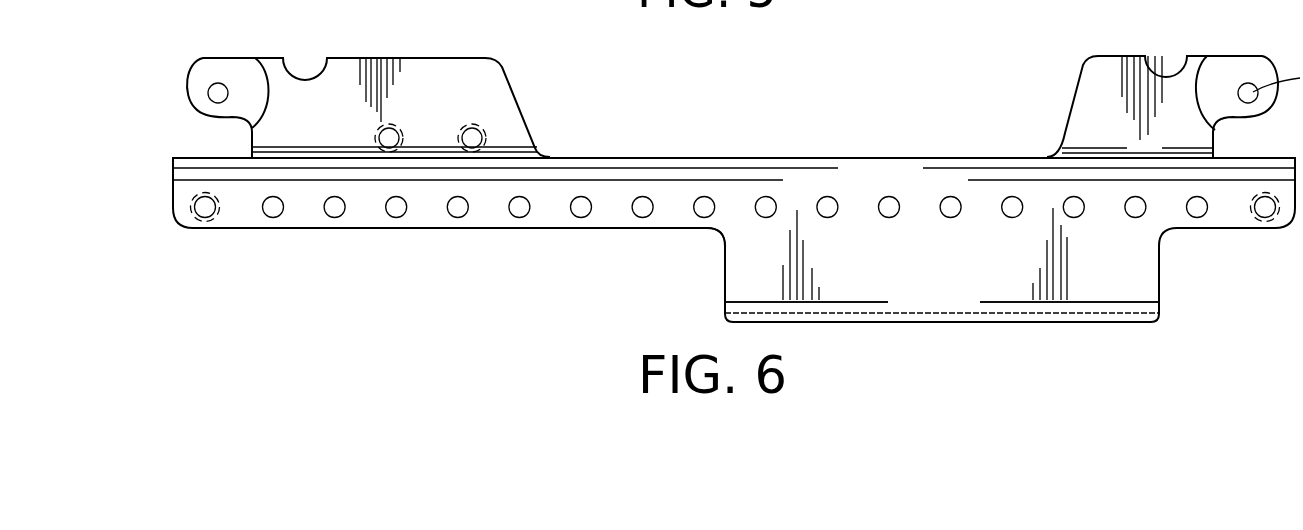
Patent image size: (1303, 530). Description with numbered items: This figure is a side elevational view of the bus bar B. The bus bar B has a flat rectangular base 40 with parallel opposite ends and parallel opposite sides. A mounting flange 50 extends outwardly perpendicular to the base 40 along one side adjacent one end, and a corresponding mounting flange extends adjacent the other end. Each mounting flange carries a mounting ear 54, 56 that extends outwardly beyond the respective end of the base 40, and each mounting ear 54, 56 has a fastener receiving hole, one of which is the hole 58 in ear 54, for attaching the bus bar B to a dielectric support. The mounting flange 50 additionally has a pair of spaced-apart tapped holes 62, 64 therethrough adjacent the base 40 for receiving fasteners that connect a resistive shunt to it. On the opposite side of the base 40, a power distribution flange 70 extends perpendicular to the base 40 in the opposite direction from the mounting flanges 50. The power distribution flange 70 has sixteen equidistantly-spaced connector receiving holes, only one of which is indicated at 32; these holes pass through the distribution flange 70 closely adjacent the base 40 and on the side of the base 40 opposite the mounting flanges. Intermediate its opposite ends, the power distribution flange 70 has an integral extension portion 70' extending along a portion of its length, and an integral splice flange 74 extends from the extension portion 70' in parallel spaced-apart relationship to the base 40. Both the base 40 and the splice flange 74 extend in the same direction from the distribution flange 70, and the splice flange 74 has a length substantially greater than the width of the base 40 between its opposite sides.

The base 40 is at (852, 157).
The mounting flange 50 is at (347, 78).
The mounting ear 54 is at (195, 78).
The mounting ear 56 is at (1237, 63).
The fastener receiving hole 58 is at (212, 88).
The tapped hole 62 is at (387, 137).
The tapped hole 64 is at (473, 137).
The power distribution flange 70 is at (735, 241).
The extension portion 70' is at (687, 271).
The connector receiving hole 32 is at (953, 208).
The splice flange 74 is at (1017, 315).
The bus bar B is at (378, 240).